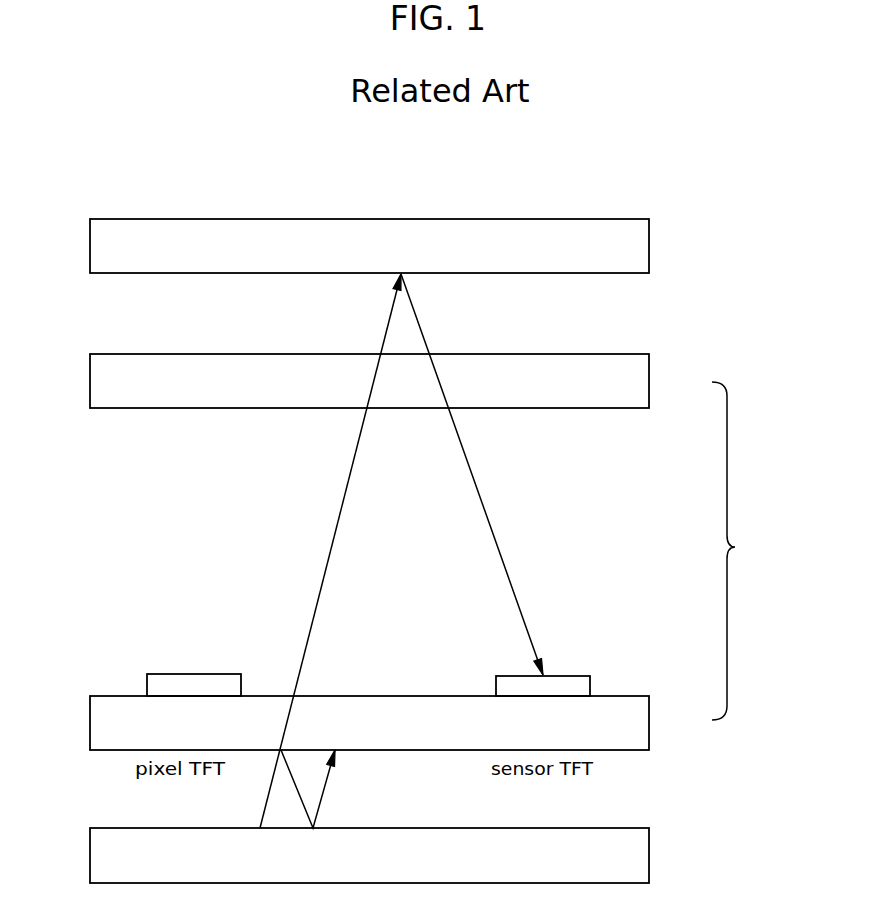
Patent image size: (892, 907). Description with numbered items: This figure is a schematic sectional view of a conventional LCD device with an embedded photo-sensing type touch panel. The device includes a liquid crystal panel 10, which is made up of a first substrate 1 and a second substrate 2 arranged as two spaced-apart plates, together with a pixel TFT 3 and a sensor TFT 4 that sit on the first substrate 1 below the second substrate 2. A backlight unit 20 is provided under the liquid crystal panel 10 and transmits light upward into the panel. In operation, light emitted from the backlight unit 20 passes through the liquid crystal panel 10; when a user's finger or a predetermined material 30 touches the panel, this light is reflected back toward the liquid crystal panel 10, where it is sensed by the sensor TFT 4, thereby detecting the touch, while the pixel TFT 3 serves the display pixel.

The user's finger or predetermined material 30 is at (649, 247).
The second substrate 2 is at (649, 382).
The first substrate 1 is at (649, 722).
The backlight unit 20 is at (649, 856).
The pixel TFT 3 is at (218, 682).
The sensor TFT 4 is at (561, 684).
The liquid crystal panel 10 is at (740, 551).